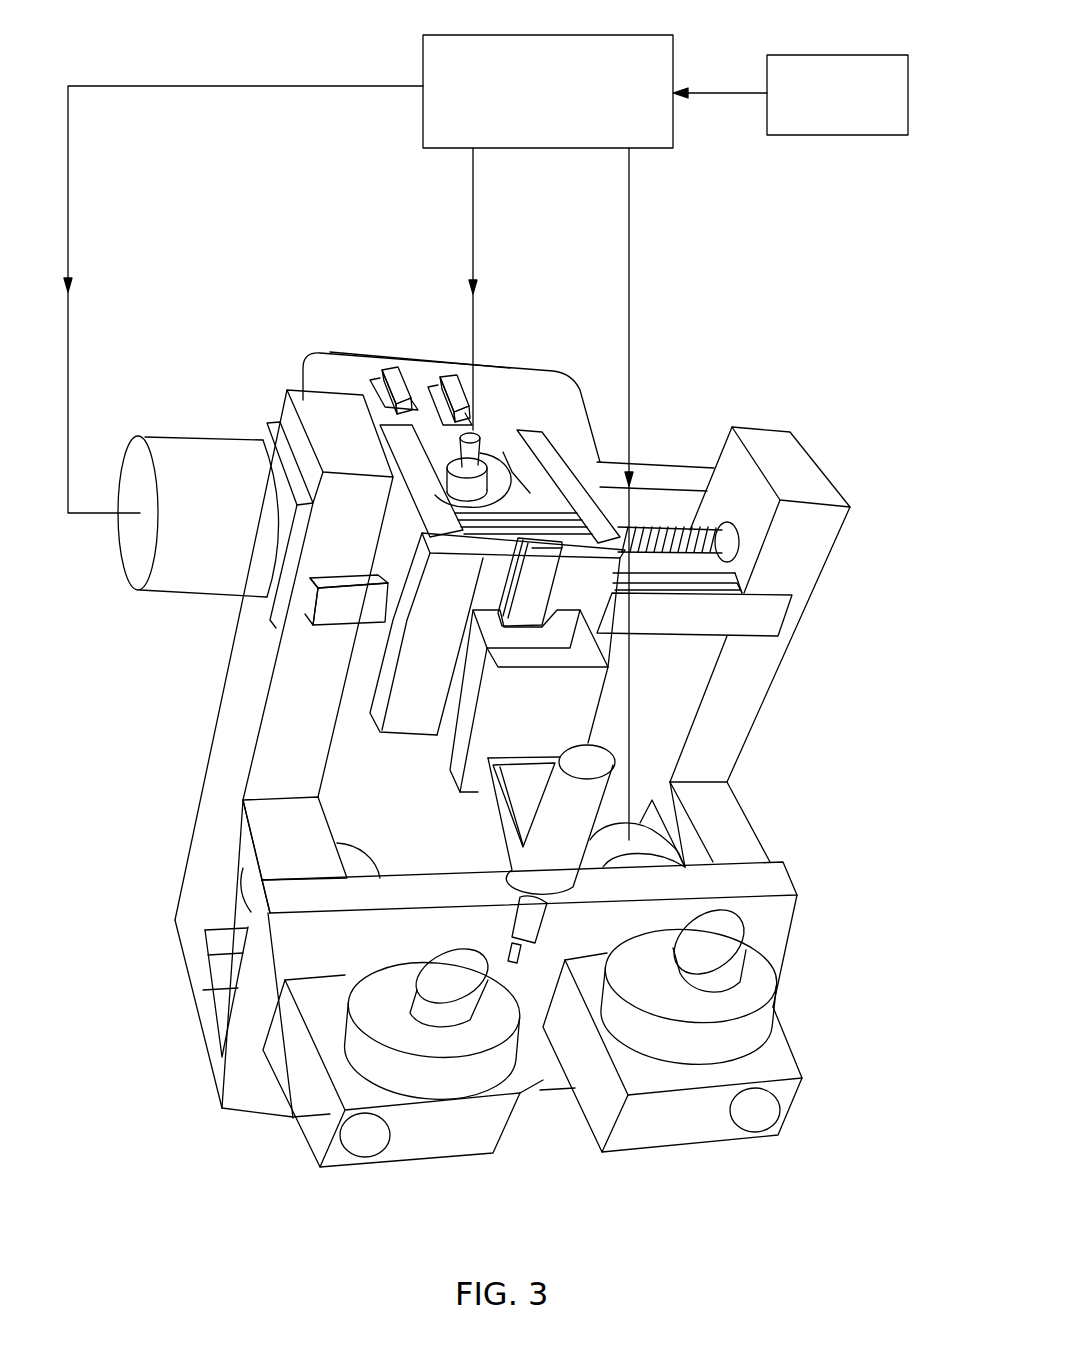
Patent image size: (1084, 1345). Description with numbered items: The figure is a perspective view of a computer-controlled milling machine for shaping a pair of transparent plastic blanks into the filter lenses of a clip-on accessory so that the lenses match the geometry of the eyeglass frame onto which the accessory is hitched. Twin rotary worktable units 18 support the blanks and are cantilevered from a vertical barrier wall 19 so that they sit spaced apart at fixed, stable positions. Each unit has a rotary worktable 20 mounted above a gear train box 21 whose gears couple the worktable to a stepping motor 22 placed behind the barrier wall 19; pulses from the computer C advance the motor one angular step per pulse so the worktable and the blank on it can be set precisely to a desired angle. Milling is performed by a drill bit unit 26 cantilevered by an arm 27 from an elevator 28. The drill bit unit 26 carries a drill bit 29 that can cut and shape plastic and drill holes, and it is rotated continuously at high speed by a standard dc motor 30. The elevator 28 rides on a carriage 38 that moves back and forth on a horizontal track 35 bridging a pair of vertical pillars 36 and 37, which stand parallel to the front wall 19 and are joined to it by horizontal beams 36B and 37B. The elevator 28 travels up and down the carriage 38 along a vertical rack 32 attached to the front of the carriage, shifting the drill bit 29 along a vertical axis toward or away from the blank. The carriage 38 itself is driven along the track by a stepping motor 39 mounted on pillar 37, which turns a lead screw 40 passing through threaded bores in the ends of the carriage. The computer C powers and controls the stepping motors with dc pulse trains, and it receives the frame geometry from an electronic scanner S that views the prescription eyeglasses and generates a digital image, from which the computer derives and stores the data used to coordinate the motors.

The computer C is at (553, 35).
The electronic scanner S is at (832, 135).
The rotary worktable unit 18 is at (417, 1050).
The vertical barrier wall 19 is at (248, 1082).
The rotary worktable 20 is at (438, 970).
The gear train box 21 is at (490, 1113).
The stepping motor 22 is at (357, 860).
The drill bit unit 26 is at (528, 927).
The arm 27 is at (507, 835).
The elevator 28 is at (470, 757).
The drill bit 29 is at (523, 958).
The dc motor 30 is at (570, 798).
The vertical rack 32 is at (503, 573).
The horizontal track 35 is at (705, 607).
The vertical pillar 36 is at (728, 692).
The horizontal beam 36B is at (717, 805).
The vertical pillar 37 is at (303, 673).
The horizontal beam 37B is at (270, 838).
The carriage 38 is at (512, 450).
The stepping motor 39 is at (186, 452).
The lead screw 40 is at (793, 432).